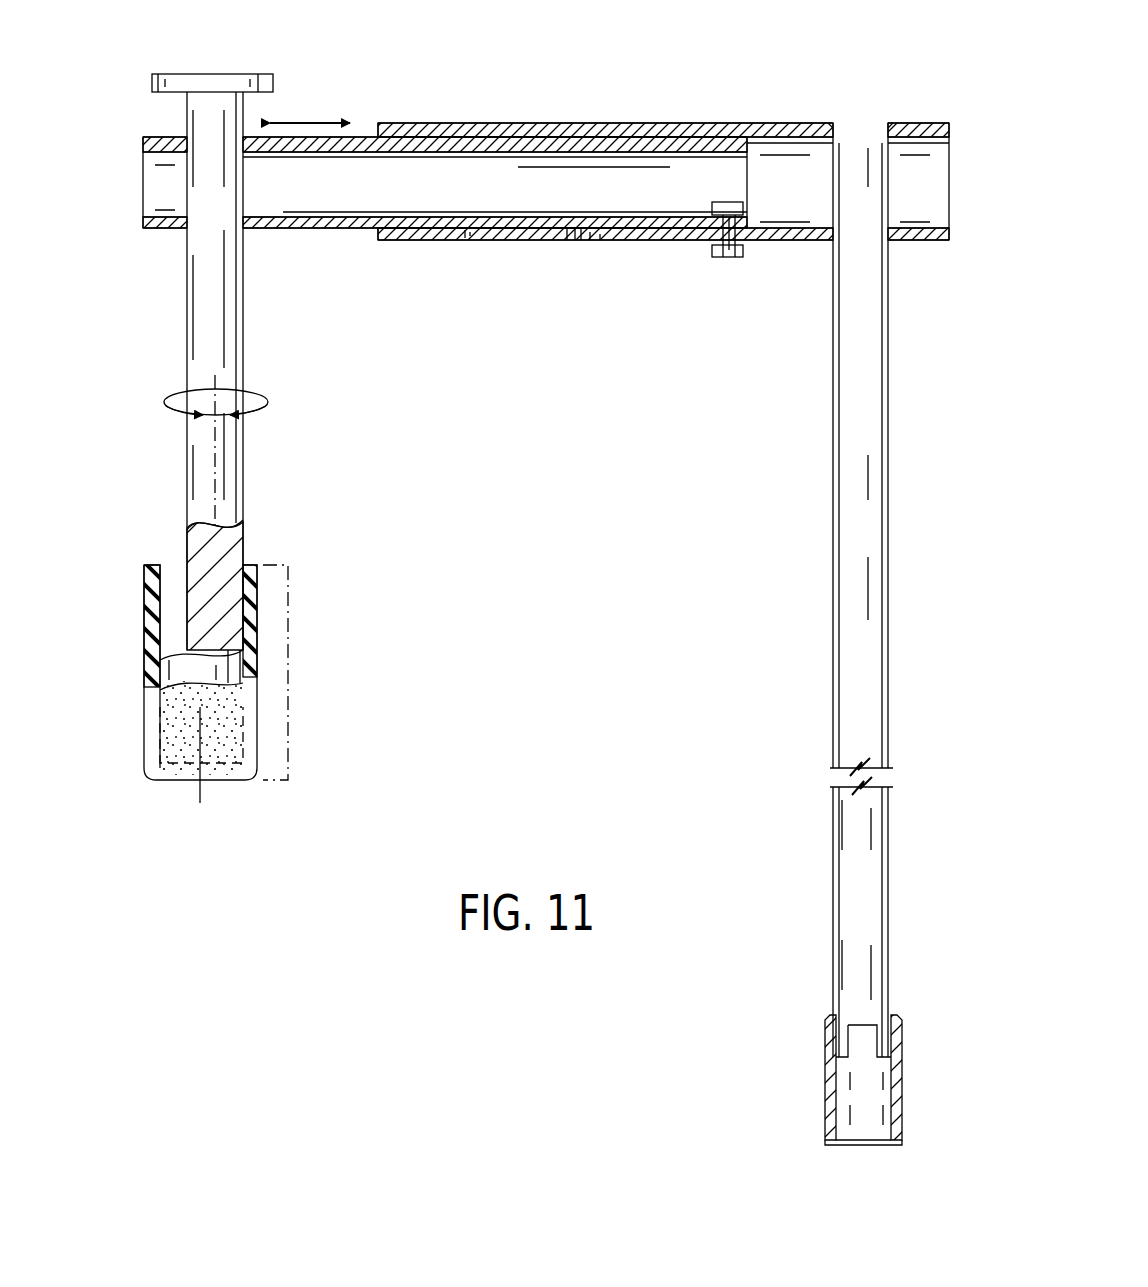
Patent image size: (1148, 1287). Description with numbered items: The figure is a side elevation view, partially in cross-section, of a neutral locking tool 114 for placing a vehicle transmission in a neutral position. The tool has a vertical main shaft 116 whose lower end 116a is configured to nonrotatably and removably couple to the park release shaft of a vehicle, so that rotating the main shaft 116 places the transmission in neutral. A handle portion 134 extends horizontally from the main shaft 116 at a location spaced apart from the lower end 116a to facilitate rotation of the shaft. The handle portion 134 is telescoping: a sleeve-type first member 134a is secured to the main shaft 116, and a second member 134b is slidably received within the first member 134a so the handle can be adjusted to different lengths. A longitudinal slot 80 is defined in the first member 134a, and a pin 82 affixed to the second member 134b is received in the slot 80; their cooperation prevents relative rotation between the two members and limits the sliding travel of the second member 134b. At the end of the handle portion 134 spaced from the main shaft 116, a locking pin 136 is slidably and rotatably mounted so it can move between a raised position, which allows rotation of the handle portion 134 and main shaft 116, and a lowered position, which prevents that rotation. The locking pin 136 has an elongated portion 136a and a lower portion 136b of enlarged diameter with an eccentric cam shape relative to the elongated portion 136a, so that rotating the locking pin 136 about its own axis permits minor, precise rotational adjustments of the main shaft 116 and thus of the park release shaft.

The neutral locking tool 114 is at (742, 78).
The handle portion 134 is at (502, 118).
The first member 134a is at (627, 121).
The second member 134b is at (335, 241).
The slot 80 is at (537, 236).
The pin 82 is at (727, 244).
The locking pin 136 is at (208, 318).
The elongated portion 136a is at (232, 466).
The lower portion 136b is at (172, 620).
The main shaft 116 is at (852, 560).
The lower end 116a is at (841, 1038).